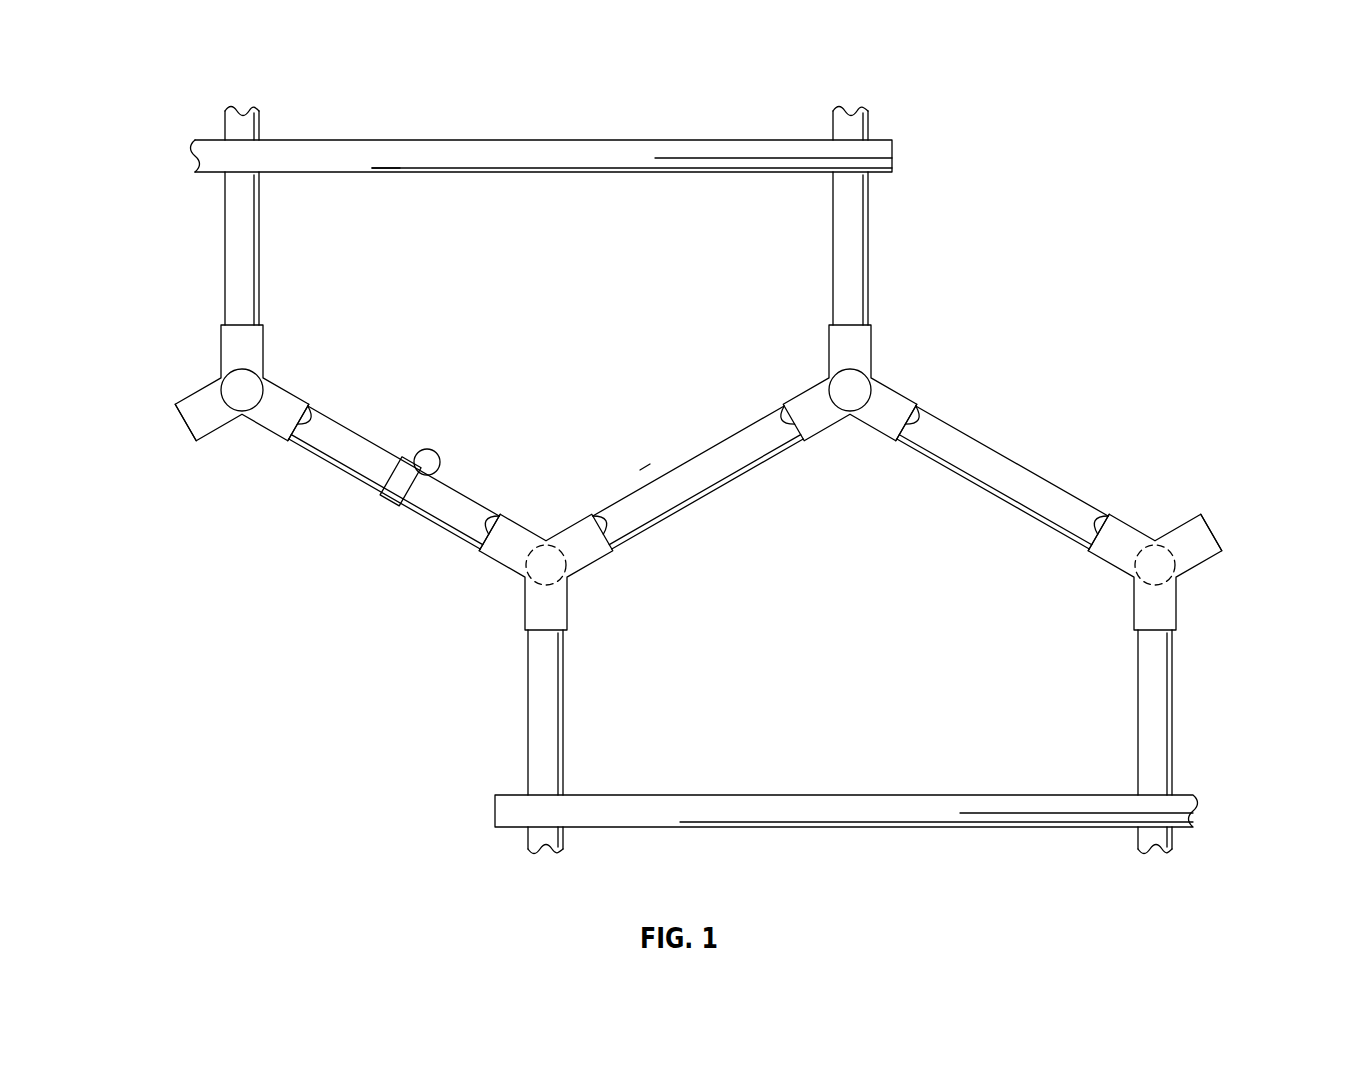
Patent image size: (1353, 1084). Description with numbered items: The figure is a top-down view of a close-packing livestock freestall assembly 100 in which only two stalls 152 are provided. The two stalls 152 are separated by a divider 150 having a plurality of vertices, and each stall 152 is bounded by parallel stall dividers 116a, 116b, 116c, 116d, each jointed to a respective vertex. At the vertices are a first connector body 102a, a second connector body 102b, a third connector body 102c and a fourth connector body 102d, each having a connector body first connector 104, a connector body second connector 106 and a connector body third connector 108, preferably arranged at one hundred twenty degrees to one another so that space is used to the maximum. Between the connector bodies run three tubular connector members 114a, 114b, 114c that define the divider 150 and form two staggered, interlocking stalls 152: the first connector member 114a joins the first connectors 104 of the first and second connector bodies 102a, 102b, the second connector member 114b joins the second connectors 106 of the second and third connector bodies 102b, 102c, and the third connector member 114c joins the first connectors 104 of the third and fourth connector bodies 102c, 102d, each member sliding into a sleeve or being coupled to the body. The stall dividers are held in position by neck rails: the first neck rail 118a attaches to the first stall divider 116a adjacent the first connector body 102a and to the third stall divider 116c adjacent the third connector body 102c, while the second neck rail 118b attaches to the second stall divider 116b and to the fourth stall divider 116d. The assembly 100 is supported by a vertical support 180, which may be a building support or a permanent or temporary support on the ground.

The close-packing livestock freestall assembly 100 is at (1097, 76).
The first connector body 102a is at (290, 396).
The second connector body 102b is at (552, 592).
The third connector body 102c is at (882, 396).
The fourth connector body 102d is at (1198, 563).
The connector body first connector 104 is at (304, 426).
The connector body second connector 106 is at (179, 428).
The connector body third connector 108 is at (244, 328).
The first connector member 114a is at (373, 473).
The second connector member 114b is at (721, 471).
The third connector member 114c is at (1000, 480).
The first stall divider 116a is at (260, 128).
The second stall divider 116b is at (566, 840).
The third stall divider 116c is at (869, 128).
The fourth stall divider 116d is at (1176, 840).
The first neck rail 118a is at (668, 147).
The second neck rail 118b is at (855, 800).
The divider 150 is at (660, 466).
The stall 152 is at (549, 112).
The vertical support 180 is at (439, 461).